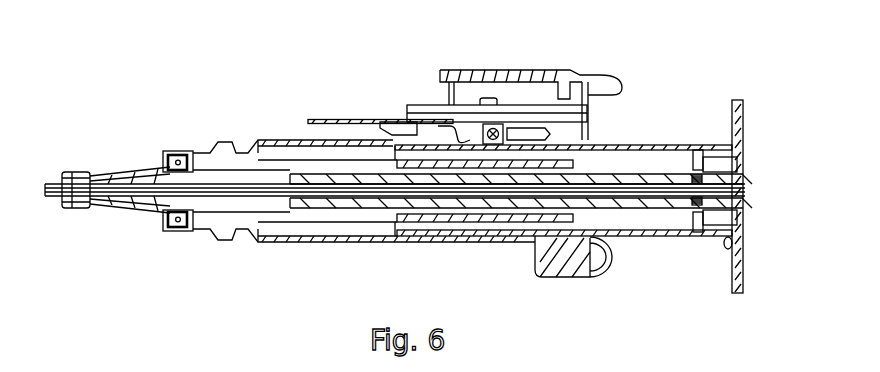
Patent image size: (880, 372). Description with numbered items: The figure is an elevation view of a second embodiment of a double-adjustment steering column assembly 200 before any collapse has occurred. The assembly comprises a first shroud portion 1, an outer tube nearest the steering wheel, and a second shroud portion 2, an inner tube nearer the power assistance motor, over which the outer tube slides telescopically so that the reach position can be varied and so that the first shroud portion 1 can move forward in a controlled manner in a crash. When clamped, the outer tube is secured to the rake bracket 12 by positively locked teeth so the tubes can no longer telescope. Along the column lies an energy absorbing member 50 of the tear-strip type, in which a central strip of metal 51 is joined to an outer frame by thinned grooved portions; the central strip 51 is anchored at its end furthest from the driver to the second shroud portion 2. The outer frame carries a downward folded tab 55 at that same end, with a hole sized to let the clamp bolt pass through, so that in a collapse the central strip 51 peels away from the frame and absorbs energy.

The first shroud portion 1 is at (293, 137).
The second shroud portion 2 is at (661, 146).
The rake bracket 12 is at (497, 130).
The energy absorbing member 50 is at (350, 120).
The central strip of metal 51 is at (465, 127).
The downward folded tab 55 is at (577, 126).
The steering column assembly 200 is at (398, 168).